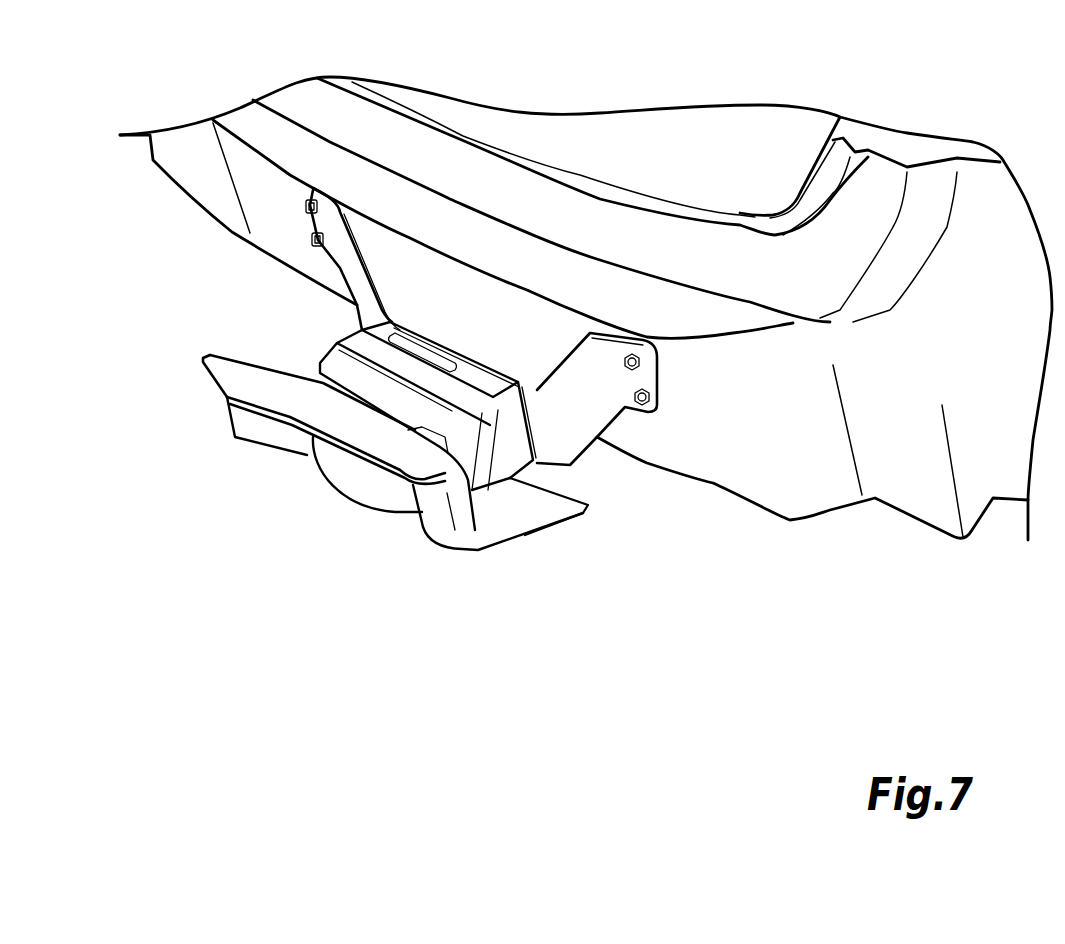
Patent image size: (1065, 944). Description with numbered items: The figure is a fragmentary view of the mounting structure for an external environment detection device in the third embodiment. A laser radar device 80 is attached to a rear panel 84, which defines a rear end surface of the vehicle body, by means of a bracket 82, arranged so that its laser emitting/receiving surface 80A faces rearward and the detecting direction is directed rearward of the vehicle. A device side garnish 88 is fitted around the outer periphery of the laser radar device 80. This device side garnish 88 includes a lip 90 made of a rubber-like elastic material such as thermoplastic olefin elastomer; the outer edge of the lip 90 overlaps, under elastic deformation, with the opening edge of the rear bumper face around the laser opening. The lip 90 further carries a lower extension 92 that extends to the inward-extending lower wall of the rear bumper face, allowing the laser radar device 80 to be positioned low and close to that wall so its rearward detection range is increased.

The laser radar device 80 is at (500, 377).
The laser emitting/receiving surface 80A is at (352, 498).
The bracket 82 is at (580, 435).
The rear panel 84 is at (715, 453).
The device side garnish 88 is at (245, 378).
The lip 90 is at (313, 437).
The lower extension 92 is at (553, 528).